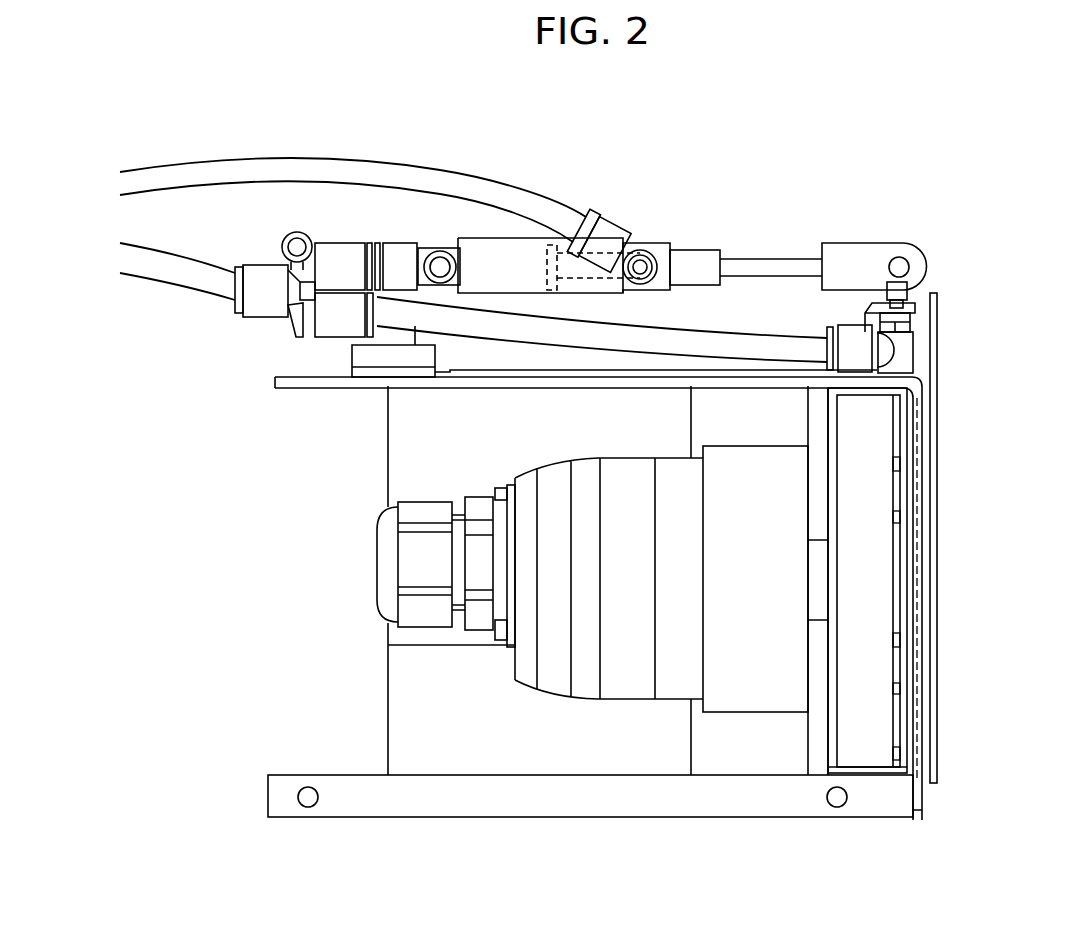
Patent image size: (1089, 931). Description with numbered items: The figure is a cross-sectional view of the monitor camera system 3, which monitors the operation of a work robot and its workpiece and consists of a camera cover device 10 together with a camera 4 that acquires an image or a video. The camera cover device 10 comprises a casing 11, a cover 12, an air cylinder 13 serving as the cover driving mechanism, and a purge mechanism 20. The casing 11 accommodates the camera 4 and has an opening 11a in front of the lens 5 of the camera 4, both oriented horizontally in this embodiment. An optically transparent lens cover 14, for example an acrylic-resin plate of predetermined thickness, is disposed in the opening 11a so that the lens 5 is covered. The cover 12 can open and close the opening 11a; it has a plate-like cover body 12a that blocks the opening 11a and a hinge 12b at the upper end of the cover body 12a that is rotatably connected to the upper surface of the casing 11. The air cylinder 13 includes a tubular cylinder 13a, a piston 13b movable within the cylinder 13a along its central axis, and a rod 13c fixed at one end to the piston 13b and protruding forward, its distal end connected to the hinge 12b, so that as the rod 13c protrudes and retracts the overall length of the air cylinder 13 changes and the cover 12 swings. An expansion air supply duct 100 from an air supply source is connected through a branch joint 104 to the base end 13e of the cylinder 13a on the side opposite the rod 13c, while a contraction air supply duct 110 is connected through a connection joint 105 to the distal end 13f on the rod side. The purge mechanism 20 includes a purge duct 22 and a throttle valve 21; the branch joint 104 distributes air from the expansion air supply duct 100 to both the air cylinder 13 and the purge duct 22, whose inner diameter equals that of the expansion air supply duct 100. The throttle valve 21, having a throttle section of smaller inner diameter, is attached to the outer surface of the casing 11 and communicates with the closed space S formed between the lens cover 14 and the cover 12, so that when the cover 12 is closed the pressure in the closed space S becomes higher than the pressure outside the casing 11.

The monitor camera system 3 is at (643, 224).
The camera 4 is at (620, 715).
The lens 5 is at (764, 713).
The camera cover device 10 is at (667, 594).
The casing 11 is at (703, 820).
The opening 11a is at (880, 773).
The cover 12 is at (934, 416).
The cover body 12a is at (936, 553).
The hinge 12b is at (923, 308).
The air cylinder 13 is at (508, 222).
The cylinder 13a is at (463, 242).
The piston 13b is at (547, 258).
The rod 13c is at (698, 250).
The base end 13e is at (404, 243).
The distal end 13f is at (650, 244).
The lens cover 14 is at (817, 777).
The purge mechanism 20 is at (779, 322).
The throttle valve 21 is at (905, 350).
The purge duct 22 is at (741, 336).
The closed space S is at (918, 591).
The expansion air supply duct 100 is at (182, 302).
The branch joint 104 is at (340, 243).
The connection joint 105 is at (607, 222).
The contraction air supply duct 110 is at (222, 157).